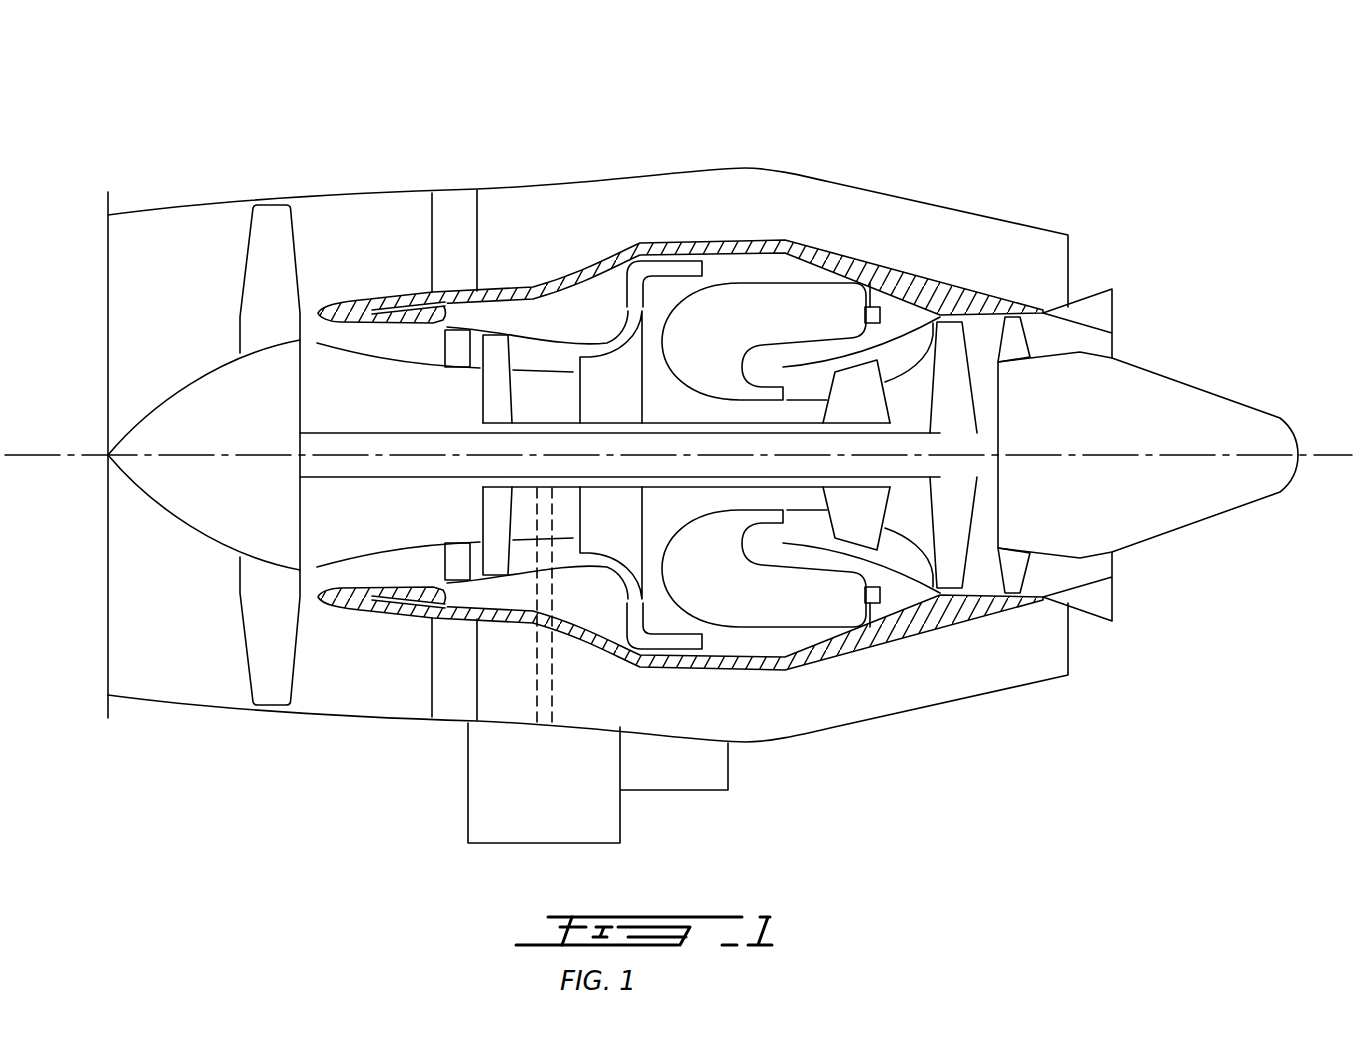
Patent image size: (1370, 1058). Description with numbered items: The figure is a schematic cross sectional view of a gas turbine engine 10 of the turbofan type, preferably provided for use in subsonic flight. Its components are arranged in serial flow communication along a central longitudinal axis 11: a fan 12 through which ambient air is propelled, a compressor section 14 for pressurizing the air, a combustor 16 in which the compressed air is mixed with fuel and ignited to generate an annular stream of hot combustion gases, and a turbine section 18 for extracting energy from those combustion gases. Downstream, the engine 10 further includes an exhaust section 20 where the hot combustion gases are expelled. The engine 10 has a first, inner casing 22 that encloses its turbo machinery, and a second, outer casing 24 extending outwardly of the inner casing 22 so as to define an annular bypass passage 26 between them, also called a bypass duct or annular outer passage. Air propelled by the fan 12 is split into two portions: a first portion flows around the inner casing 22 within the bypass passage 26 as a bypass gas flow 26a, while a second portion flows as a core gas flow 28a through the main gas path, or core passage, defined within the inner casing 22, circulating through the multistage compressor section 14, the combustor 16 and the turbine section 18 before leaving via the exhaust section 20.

The gas turbine engine 10 is at (678, 445).
The central longitudinal axis 11 is at (1337, 455).
The fan 12 is at (265, 617).
The compressor section 14 is at (537, 348).
The combustor 16 is at (765, 307).
The turbine section 18 is at (905, 525).
The exhaust section 20 is at (1077, 595).
The inner casing 22 is at (770, 673).
The outer casing 24 is at (320, 712).
The bypass passage 26 is at (838, 704).
The bypass gas flow 26a is at (332, 652).
The core gas flow 28a is at (428, 502).